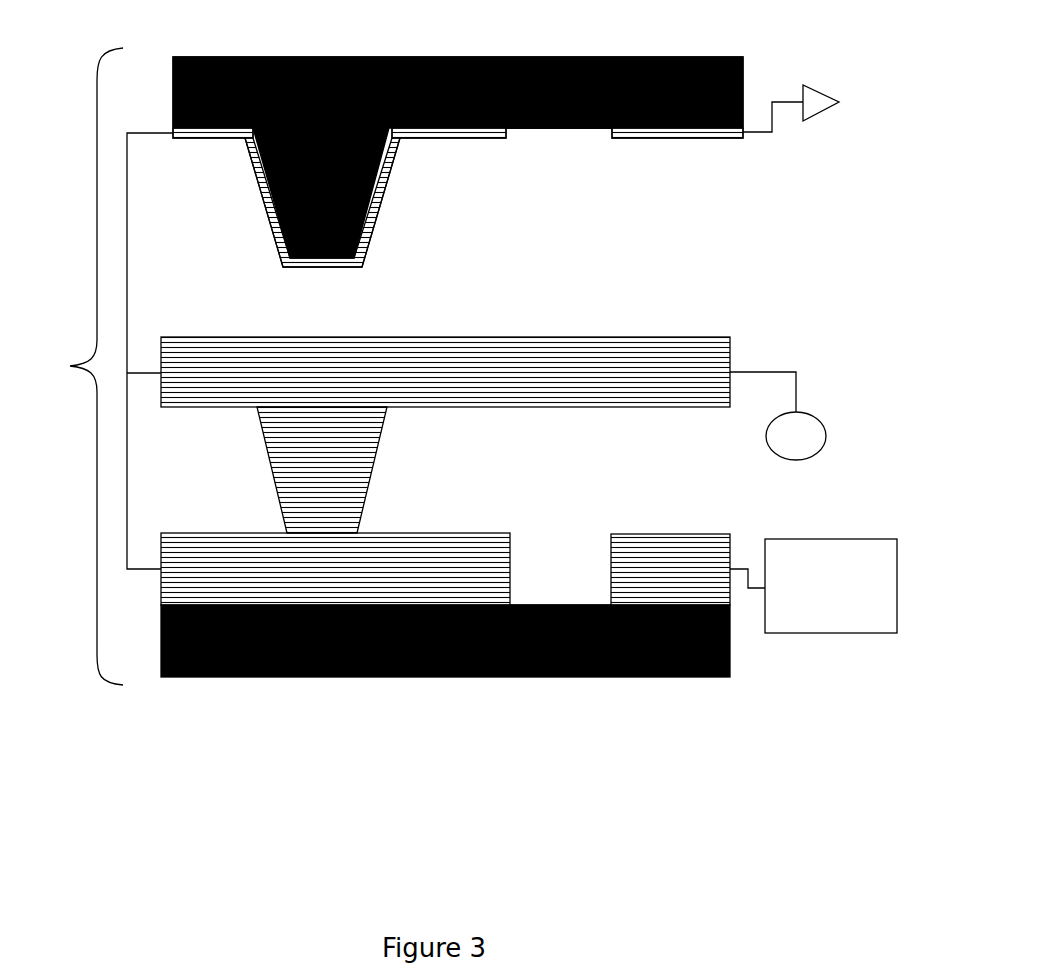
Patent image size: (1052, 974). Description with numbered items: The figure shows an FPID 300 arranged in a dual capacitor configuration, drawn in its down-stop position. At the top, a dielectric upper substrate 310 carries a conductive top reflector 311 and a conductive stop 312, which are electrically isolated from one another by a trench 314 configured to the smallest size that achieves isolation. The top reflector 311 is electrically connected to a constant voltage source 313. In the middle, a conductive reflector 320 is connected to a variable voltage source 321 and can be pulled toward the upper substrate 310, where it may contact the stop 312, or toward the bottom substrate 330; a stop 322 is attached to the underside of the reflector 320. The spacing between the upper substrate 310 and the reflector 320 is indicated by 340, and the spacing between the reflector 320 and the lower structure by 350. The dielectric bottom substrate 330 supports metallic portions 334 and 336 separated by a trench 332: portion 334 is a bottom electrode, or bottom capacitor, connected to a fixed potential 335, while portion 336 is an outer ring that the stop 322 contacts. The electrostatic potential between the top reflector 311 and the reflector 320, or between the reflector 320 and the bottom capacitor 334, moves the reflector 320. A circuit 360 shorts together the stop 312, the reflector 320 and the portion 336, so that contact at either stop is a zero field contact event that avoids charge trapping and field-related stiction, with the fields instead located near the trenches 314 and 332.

The FPID 300 is at (66, 366).
The upper substrate 310 is at (458, 57).
The top reflector 311 is at (695, 141).
The stop 312 is at (322, 275).
The constant voltage source 313 is at (820, 90).
The trench 314 is at (576, 141).
The reflector 320 is at (445, 372).
The variable voltage source 321 is at (790, 460).
The stop 322 is at (270, 472).
The bottom substrate 330 is at (730, 637).
The trench 332 is at (555, 544).
The bottom capacitor 334 is at (670, 569).
The fixed potential 335 is at (813, 586).
The bottom outer stop 336 is at (335, 569).
The upper gap distance 340 is at (459, 336).
The lower gap distance 350 is at (458, 408).
The circuit 360 is at (131, 295).